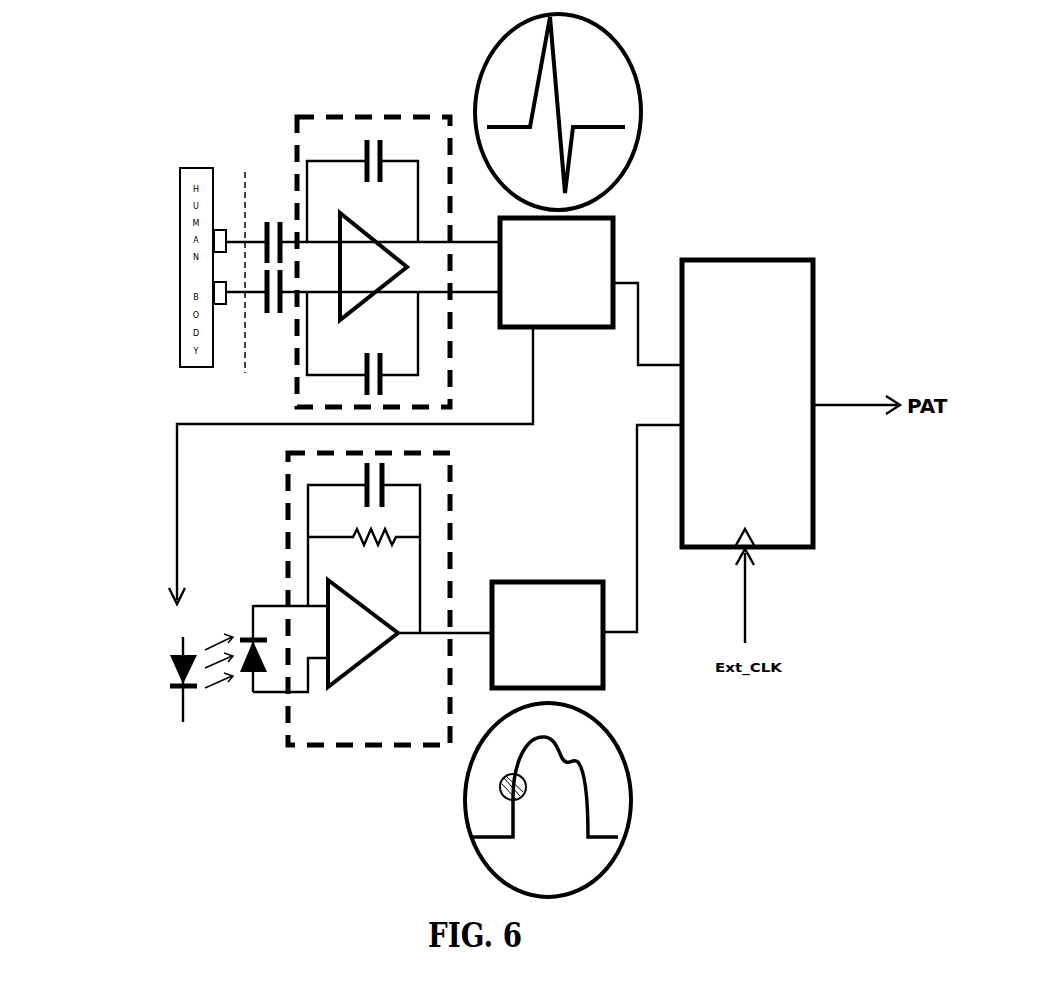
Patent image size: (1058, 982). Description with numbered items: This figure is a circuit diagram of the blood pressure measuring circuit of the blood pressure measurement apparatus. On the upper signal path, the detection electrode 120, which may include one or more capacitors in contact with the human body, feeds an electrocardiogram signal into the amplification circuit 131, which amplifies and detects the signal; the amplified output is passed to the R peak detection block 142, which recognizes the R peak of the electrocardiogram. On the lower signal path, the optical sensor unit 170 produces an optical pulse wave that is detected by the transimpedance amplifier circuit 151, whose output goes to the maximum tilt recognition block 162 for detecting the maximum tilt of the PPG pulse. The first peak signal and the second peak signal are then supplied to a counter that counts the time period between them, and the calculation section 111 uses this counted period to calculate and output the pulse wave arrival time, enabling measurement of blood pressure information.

The calculation section 111 is at (815, 333).
The detection electrode 120 is at (277, 215).
The amplification circuit 131 is at (390, 112).
The R peak detection block 142 is at (610, 263).
The transimpedance amplifier circuit 151 is at (372, 750).
The maximum tilt recognition block 162 is at (605, 686).
The optical sensor unit 170 is at (158, 672).